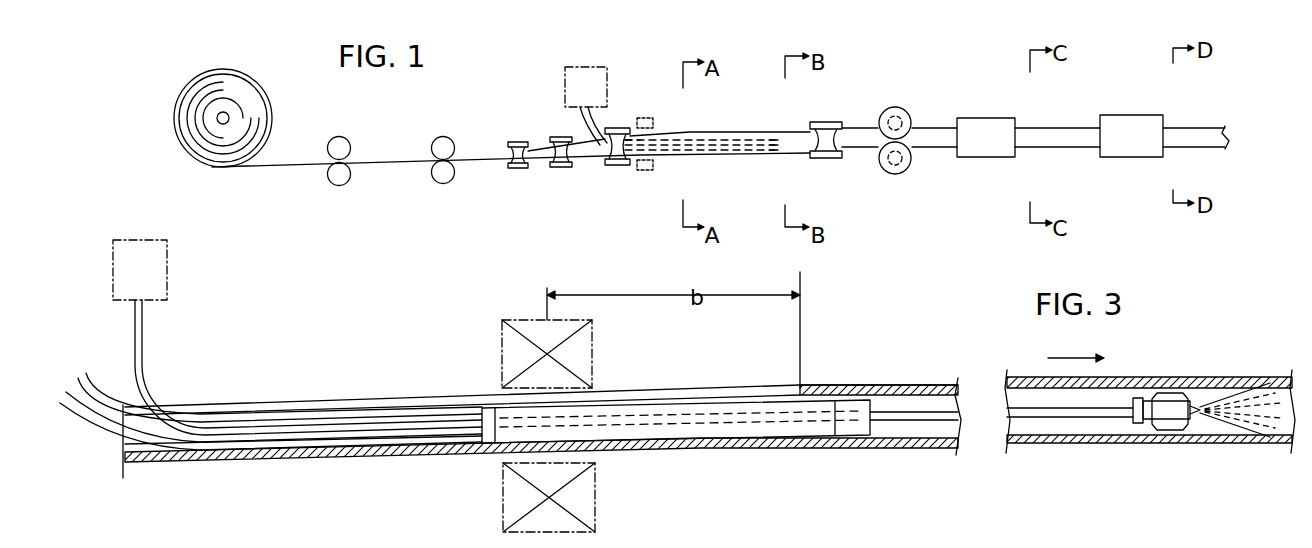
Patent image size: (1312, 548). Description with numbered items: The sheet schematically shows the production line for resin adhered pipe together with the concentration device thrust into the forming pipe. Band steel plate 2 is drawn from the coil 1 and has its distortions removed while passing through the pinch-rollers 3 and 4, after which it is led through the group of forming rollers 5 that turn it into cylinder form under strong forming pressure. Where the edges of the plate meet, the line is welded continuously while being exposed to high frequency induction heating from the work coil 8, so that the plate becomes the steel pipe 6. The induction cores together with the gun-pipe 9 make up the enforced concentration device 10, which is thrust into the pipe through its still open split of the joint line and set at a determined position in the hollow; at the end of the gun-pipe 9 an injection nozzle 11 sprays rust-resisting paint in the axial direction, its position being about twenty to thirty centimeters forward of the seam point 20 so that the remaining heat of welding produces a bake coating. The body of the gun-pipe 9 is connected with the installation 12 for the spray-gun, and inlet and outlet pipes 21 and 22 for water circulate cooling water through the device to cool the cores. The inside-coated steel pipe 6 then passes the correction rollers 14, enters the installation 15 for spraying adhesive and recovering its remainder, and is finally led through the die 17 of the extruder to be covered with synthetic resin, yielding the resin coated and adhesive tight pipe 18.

In FIG. 1, the coil 1 is at (259, 92).
In FIG. 1, the band steel plate 2 is at (289, 168).
In FIG. 1, the pinch-roller 3 is at (351, 138).
In FIG. 1, the pinch-roller 4 is at (443, 128).
In FIG. 1, the group of forming rollers 5 is at (627, 185).
In FIG. 1, the steel pipe 6 is at (734, 154).
In FIG. 1, the work coil 8 is at (651, 118).
In FIG. 2, the work coil 8 is at (592, 363).
In FIG. 1, the gun-pipe 9 is at (588, 113).
In FIG. 2, the gun-pipe 9 is at (133, 372).
In FIG. 3, the gun-pipe 9 is at (1060, 419).
In FIG. 1, the enforced concentration device 10 is at (677, 150).
In FIG. 2, the enforced concentration device 10 is at (880, 403).
In FIG. 1, the injection nozzle 11 is at (772, 140).
In FIG. 3, the injection nozzle 11 is at (1190, 431).
In FIG. 1, the installation for the spray-gun 12 is at (608, 70).
In FIG. 2, the installation for the spray-gun 12 is at (167, 274).
In FIG. 1, the correction rollers 14 is at (815, 105).
In FIG. 1, the installation for spraying adhesive 15 is at (993, 122).
In FIG. 1, the die of the extruder 17 is at (1163, 112).
In FIG. 1, the resin coated and adhesive tight pipe 18 is at (1203, 128).
In FIG. 2, the seam point 20 is at (804, 388).
In FIG. 2, the inlet pipe for water 21 is at (79, 377).
In FIG. 2, the outlet pipe for water 22 is at (93, 434).